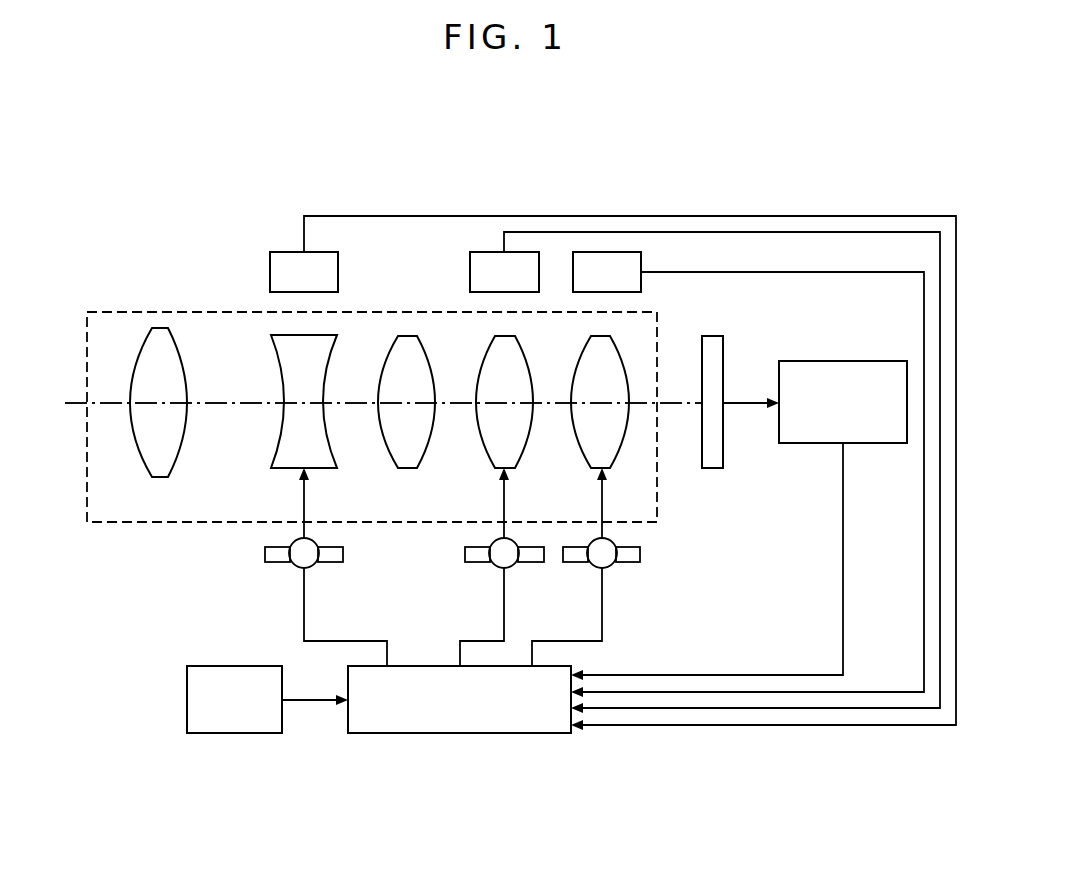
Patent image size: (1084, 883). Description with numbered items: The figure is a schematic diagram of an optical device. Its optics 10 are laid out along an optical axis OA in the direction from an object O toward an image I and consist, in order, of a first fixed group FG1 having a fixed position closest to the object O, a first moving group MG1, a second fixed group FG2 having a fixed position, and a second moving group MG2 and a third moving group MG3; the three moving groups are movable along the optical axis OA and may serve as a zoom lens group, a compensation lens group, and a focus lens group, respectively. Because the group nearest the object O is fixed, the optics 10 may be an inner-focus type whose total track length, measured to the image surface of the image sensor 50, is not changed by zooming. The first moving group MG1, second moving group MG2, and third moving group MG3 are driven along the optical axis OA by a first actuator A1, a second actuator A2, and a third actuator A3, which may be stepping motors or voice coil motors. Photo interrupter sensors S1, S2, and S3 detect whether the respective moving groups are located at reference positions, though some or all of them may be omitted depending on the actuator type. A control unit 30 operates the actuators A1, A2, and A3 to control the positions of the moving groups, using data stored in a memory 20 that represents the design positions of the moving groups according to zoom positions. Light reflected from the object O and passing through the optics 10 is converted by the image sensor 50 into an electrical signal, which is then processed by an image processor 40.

The optics 10 is at (657, 500).
The memory 20 is at (233, 735).
The control unit 30 is at (462, 735).
The image processor 40 is at (843, 361).
The image sensor 50 is at (723, 349).
The photo interrupter sensor S1 is at (270, 271).
The photo interrupter sensor S2 is at (470, 271).
The photo interrupter sensor S3 is at (643, 263).
The first actuator A1 is at (335, 563).
The second actuator A2 is at (536, 563).
The third actuator A3 is at (633, 563).
The first fixed group FG1 is at (142, 457).
The second fixed group FG2 is at (385, 453).
The first moving group MG1 is at (277, 450).
The second moving group MG2 is at (483, 453).
The third moving group MG3 is at (580, 453).
The optical axis OA is at (110, 403).
The object O is at (372, 404).
The image I is at (704, 402).